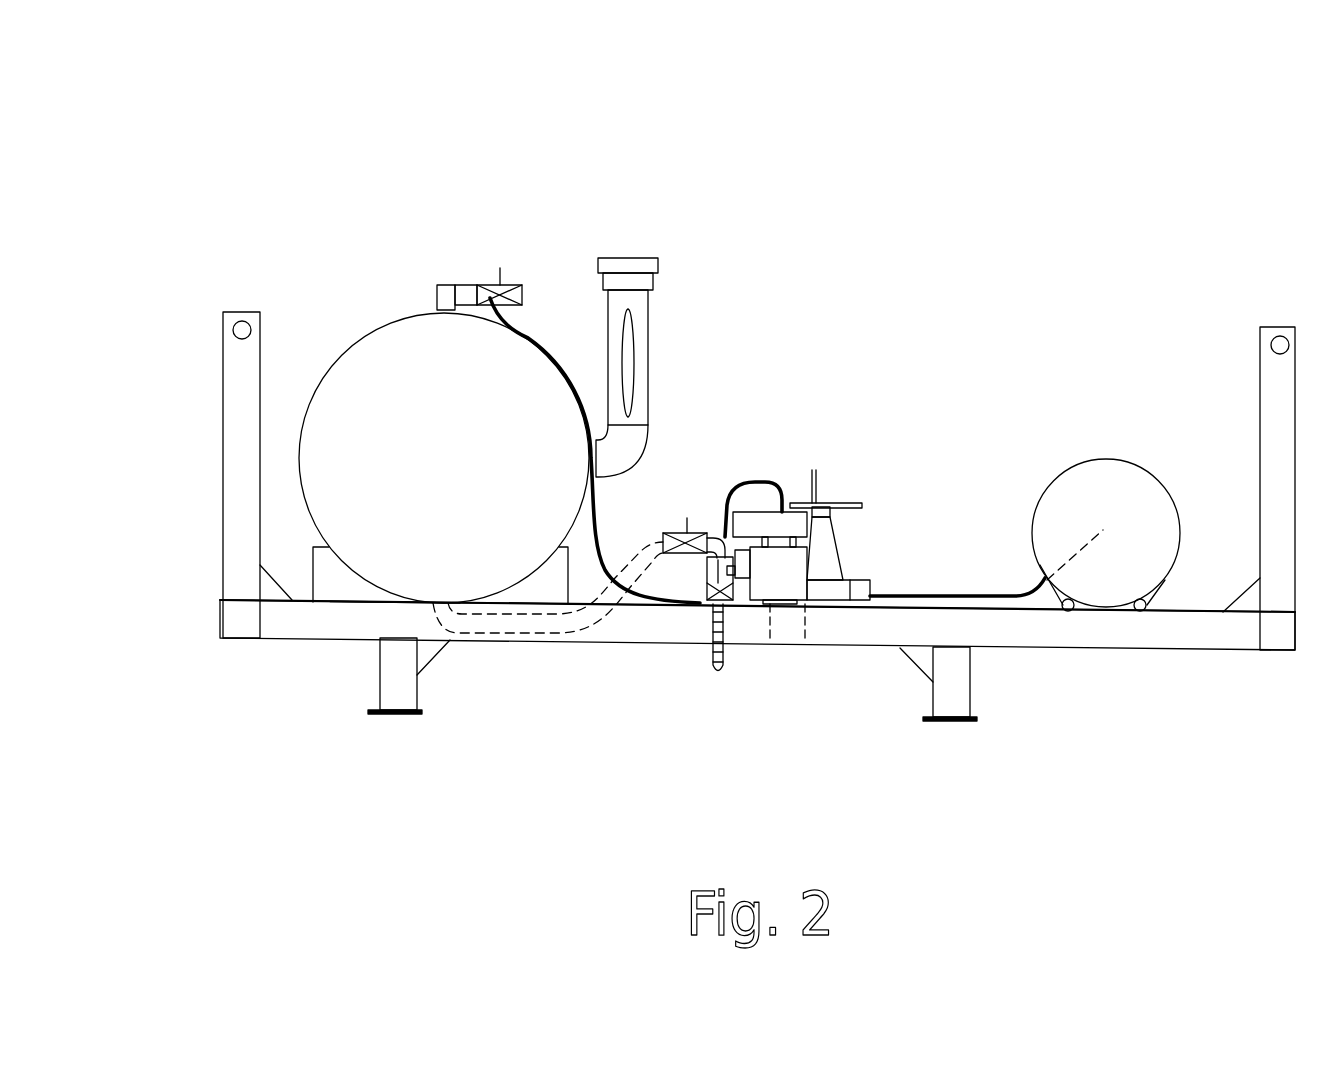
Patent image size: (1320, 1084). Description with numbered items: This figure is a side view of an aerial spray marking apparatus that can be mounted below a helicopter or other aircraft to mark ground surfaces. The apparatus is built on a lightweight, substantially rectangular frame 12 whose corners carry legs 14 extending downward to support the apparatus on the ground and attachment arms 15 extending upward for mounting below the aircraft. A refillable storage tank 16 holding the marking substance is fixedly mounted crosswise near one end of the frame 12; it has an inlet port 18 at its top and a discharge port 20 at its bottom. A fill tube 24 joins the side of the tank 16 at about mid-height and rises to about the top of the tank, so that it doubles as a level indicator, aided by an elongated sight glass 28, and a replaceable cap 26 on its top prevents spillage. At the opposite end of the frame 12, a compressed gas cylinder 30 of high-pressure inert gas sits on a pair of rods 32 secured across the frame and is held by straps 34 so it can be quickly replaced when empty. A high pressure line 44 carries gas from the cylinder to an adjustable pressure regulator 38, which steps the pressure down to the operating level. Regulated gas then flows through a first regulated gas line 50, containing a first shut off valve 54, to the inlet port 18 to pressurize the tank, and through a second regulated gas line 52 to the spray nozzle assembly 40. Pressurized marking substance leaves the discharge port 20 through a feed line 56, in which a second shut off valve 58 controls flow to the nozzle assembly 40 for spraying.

The frame 12 is at (757, 683).
The legs 14 is at (742, 738).
The attachment arm 15 is at (759, 374).
The storage tank 16 is at (432, 432).
The inlet port 18 is at (402, 246).
The discharge port 20 is at (330, 676).
The fill tube 24 is at (717, 321).
The replaceable cap 26 is at (638, 220).
The sight glass 28 is at (706, 305).
The compressed gas cylinder 30 is at (1086, 474).
The rods 32 is at (1164, 638).
The straps 34 is at (1169, 452).
The adjustable pressure regulator 38 is at (826, 518).
The spray nozzle assembly 40 is at (772, 654).
The high pressure line 44 is at (957, 536).
The first regulated gas line 50 is at (574, 450).
The second regulated gas line 52 is at (821, 390).
The first shut off valve 54 is at (487, 225).
The feed line 56 is at (551, 615).
The second shut off valve 58 is at (706, 500).